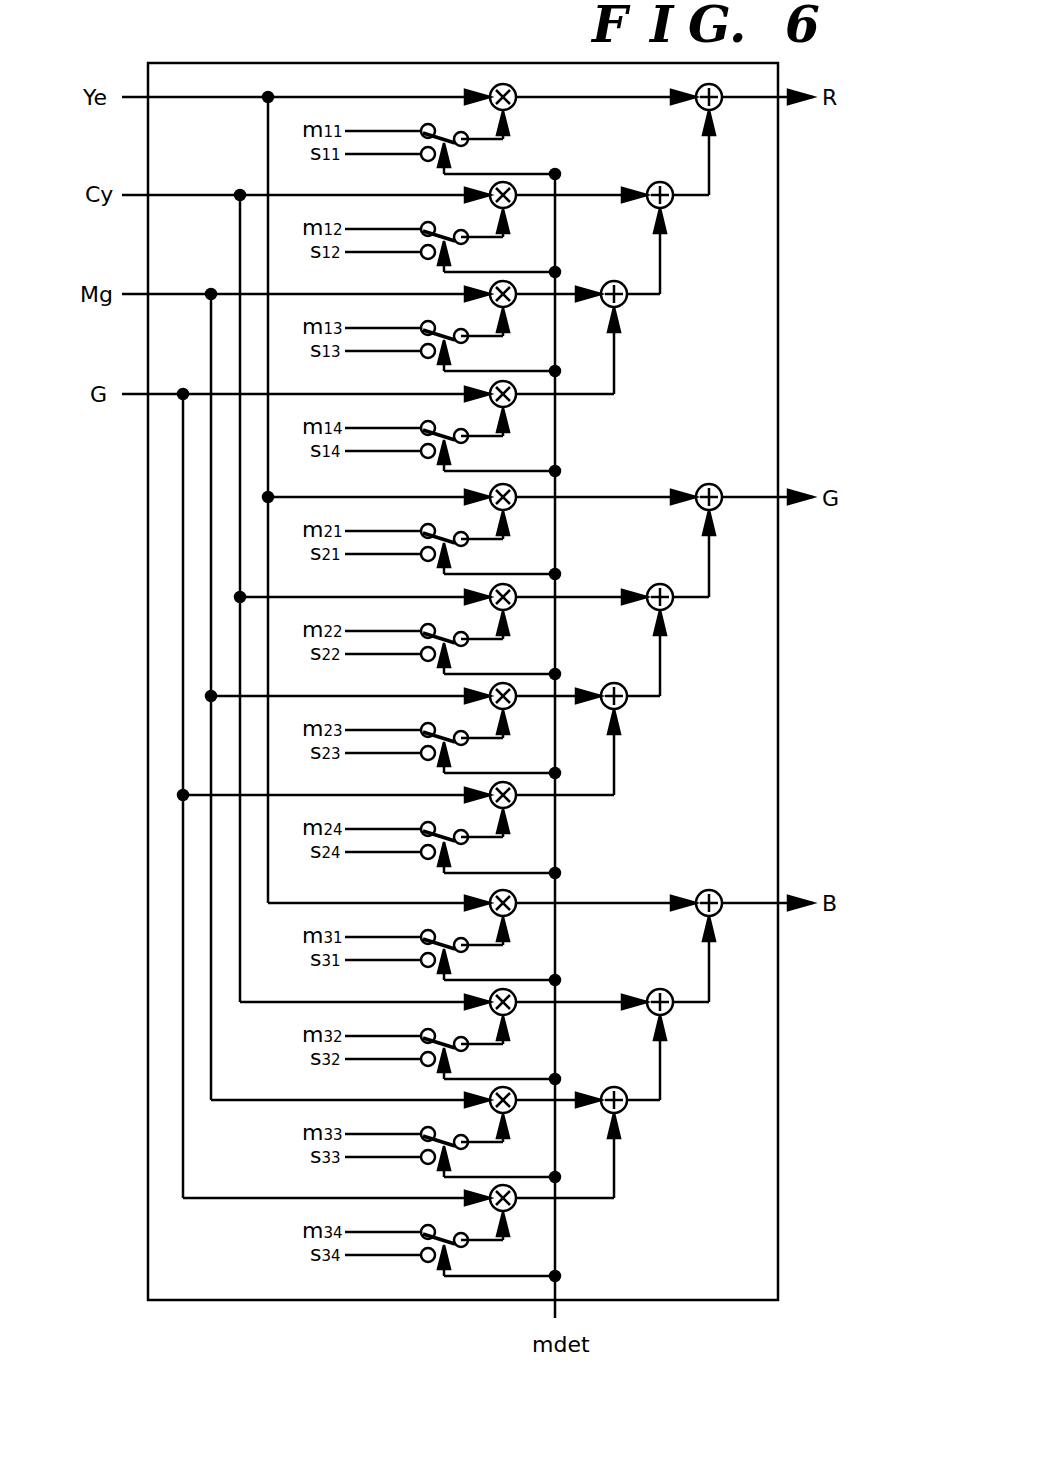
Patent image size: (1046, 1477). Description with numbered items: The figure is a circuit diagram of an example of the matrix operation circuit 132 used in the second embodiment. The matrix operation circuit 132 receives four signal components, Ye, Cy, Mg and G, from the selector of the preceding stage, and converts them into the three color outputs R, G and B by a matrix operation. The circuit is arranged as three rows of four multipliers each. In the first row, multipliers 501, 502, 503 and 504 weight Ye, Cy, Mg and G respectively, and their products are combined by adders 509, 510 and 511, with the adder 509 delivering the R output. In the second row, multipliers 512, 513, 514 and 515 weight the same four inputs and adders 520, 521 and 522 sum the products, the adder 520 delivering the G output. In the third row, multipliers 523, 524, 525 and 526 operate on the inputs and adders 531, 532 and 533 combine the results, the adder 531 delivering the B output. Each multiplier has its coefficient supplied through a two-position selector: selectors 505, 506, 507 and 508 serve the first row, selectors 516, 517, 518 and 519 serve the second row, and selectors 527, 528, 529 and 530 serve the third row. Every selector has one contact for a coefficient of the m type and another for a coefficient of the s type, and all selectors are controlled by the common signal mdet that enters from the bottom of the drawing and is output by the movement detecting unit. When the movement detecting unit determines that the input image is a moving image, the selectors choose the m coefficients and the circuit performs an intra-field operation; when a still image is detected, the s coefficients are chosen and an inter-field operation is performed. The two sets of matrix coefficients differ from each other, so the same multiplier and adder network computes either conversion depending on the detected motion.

The matrix operation circuit 132 is at (778, 418).
The multiplier 501 is at (511, 106).
The multiplier 502 is at (511, 204).
The multiplier 503 is at (511, 303).
The multiplier 504 is at (511, 403).
The selector 505 is at (447, 137).
The selector 506 is at (447, 235).
The selector 507 is at (447, 334).
The selector 508 is at (447, 434).
The adder 509 is at (718, 107).
The adder 510 is at (658, 184).
The adder 511 is at (604, 282).
The multiplier 512 is at (511, 506).
The multiplier 513 is at (511, 606).
The multiplier 514 is at (511, 705).
The multiplier 515 is at (511, 804).
The selector 516 is at (447, 537).
The selector 517 is at (447, 637).
The selector 518 is at (447, 736).
The selector 519 is at (447, 835).
The adder 520 is at (718, 487).
The adder 521 is at (658, 584).
The adder 522 is at (606, 684).
The multiplier 523 is at (511, 912).
The multiplier 524 is at (511, 1011).
The multiplier 525 is at (511, 1109).
The multiplier 526 is at (511, 1207).
The selector 527 is at (447, 943).
The selector 528 is at (447, 1042).
The selector 529 is at (447, 1140).
The selector 530 is at (447, 1238).
The adder 531 is at (718, 895).
The adder 532 is at (658, 982).
The adder 533 is at (606, 1088).